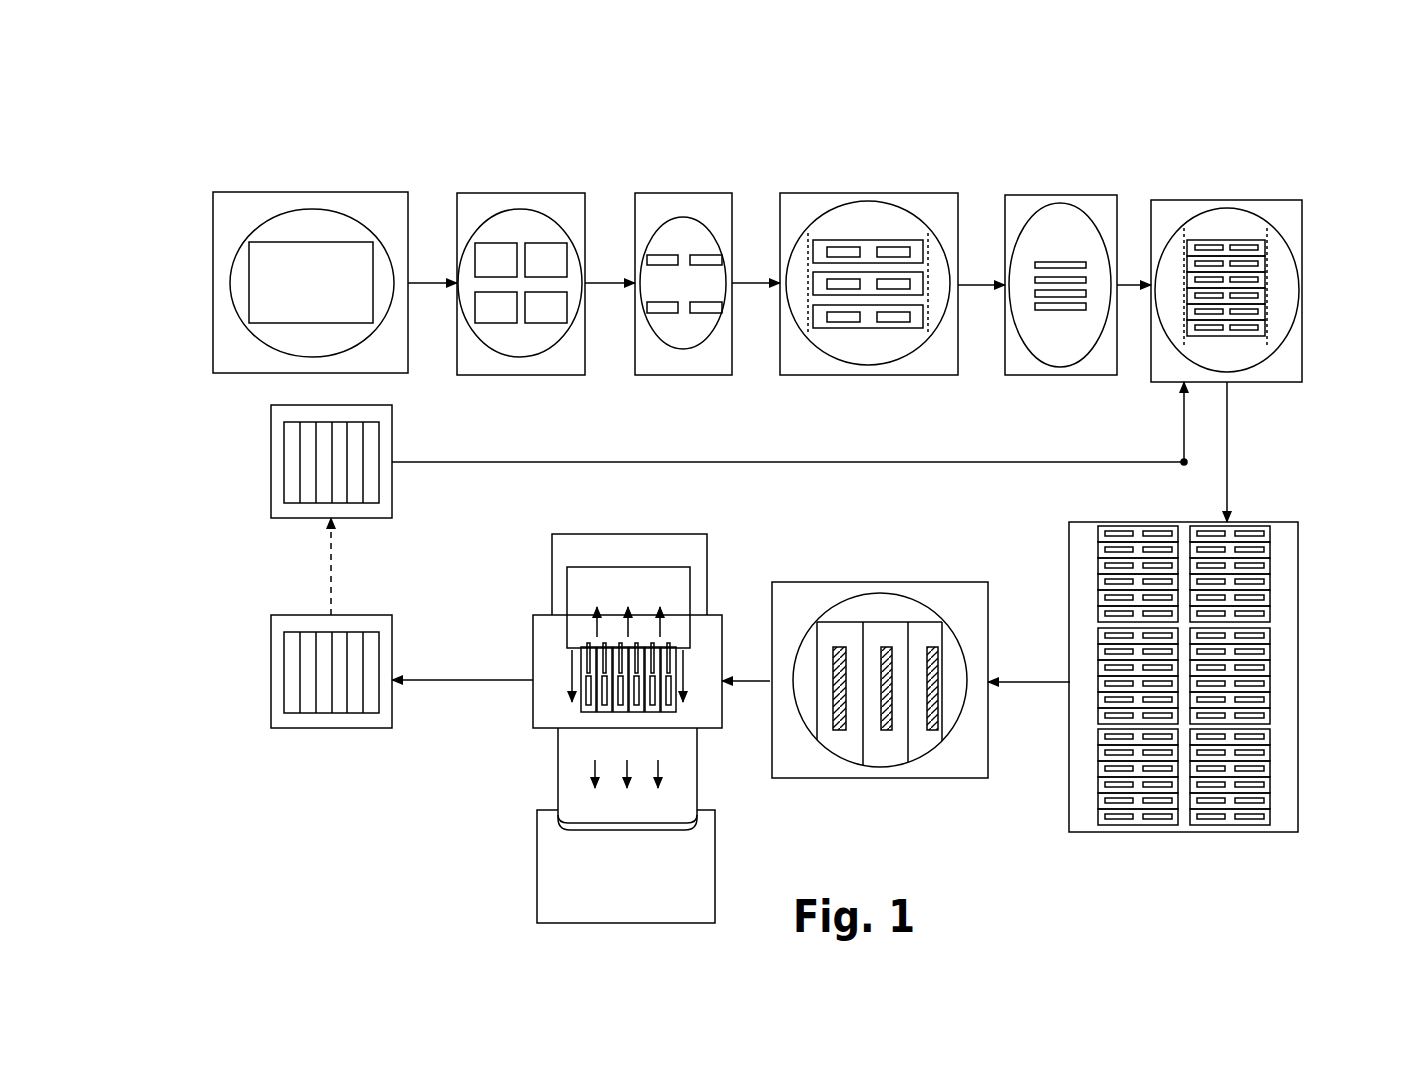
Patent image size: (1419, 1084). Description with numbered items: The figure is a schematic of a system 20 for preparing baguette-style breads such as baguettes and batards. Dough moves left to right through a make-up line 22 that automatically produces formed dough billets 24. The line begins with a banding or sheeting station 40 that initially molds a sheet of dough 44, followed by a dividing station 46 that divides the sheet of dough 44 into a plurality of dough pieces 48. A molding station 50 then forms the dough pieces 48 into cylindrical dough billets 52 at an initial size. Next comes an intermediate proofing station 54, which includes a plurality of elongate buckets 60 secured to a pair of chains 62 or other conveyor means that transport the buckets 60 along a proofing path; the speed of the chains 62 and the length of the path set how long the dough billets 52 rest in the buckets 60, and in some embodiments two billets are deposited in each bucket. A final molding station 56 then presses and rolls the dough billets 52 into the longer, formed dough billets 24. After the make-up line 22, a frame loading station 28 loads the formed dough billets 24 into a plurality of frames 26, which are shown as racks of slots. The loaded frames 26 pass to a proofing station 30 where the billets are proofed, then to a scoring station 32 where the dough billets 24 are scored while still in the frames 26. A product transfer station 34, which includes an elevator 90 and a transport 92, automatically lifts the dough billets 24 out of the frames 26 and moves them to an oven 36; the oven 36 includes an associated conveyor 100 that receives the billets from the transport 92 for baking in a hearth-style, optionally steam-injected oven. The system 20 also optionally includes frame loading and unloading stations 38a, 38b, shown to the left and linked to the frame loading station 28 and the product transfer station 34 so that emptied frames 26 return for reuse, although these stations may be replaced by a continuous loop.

The system 20 is at (1110, 148).
The make-up line 22 is at (573, 177).
The formed dough billets 24 is at (1063, 262).
The frames 26 is at (1228, 233).
The frame loading station 28 is at (1285, 183).
The proofing station 30 is at (1322, 560).
The scoring station 32 is at (880, 798).
The product transfer station 34 is at (727, 550).
The oven 36 is at (527, 885).
The frame loading station 38a is at (262, 466).
The frame unloading station 38b is at (250, 683).
The sheeting station 40 is at (312, 182).
The sheet of dough 44 is at (318, 233).
The dividing station 46 is at (508, 190).
The dough pieces 48 is at (552, 243).
The molding station 50 is at (702, 180).
The cylindrical dough billets 52 is at (697, 332).
The intermediate proofing station 54 is at (893, 178).
The final molding station 56 is at (1057, 385).
The elongate buckets 60 is at (898, 233).
The chains 62 is at (935, 328).
The elevator 90 is at (535, 708).
The transport 92 is at (563, 582).
The conveyor 100 is at (700, 783).